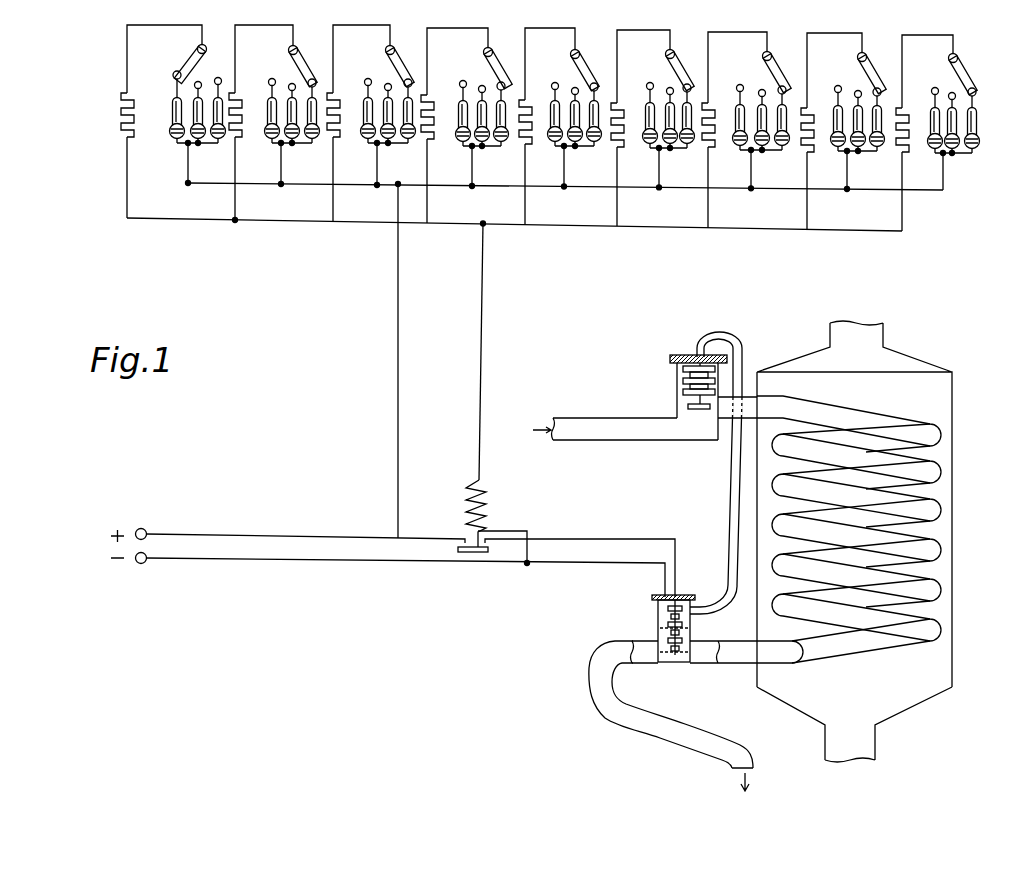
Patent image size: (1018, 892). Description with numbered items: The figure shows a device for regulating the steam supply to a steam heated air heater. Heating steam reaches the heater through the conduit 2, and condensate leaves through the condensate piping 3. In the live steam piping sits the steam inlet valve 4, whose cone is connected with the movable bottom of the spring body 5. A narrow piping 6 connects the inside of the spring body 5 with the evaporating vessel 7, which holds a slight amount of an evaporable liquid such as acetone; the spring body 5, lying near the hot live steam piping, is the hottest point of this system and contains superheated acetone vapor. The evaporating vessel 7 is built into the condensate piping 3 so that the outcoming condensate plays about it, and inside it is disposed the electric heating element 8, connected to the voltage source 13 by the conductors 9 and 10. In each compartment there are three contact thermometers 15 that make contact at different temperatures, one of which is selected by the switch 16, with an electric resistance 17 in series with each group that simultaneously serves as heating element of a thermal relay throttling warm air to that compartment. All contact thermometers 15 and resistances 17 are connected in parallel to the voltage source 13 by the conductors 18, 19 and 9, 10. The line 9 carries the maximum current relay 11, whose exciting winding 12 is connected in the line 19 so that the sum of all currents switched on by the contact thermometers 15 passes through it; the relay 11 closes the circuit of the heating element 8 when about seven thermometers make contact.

The conduit 2 is at (582, 428).
The condensate piping 3 is at (650, 722).
The steam inlet valve 4 is at (698, 409).
The spring body 5 is at (677, 378).
The narrow piping 6 is at (728, 503).
The evaporating vessel 7 is at (657, 619).
The electric heating element 8 is at (696, 621).
The conductor 9 is at (227, 534).
The conductor 10 is at (185, 560).
The maximum current relay 11 is at (462, 553).
The exciting winding 12 is at (469, 509).
The voltage source 13 is at (114, 546).
The contact thermometers 15 is at (204, 140).
The switch 16 is at (186, 58).
The electric resistance 17 is at (120, 115).
The conductor 18 is at (397, 265).
The conductor 19 is at (481, 265).